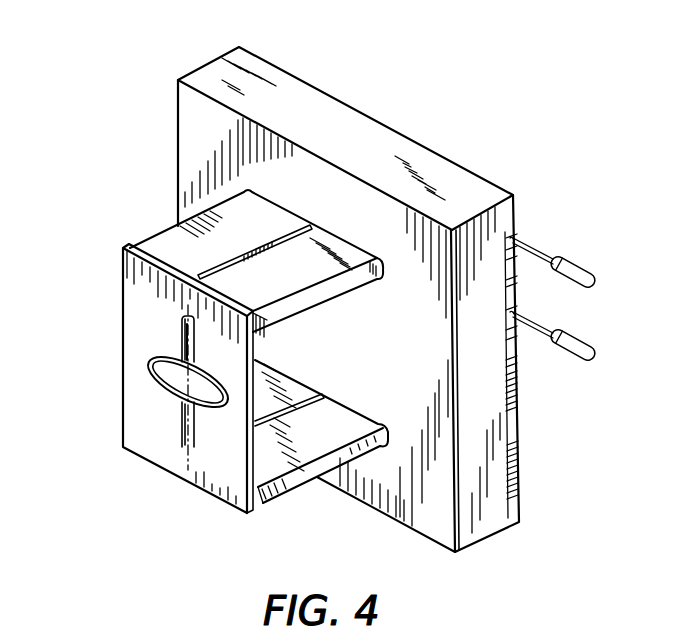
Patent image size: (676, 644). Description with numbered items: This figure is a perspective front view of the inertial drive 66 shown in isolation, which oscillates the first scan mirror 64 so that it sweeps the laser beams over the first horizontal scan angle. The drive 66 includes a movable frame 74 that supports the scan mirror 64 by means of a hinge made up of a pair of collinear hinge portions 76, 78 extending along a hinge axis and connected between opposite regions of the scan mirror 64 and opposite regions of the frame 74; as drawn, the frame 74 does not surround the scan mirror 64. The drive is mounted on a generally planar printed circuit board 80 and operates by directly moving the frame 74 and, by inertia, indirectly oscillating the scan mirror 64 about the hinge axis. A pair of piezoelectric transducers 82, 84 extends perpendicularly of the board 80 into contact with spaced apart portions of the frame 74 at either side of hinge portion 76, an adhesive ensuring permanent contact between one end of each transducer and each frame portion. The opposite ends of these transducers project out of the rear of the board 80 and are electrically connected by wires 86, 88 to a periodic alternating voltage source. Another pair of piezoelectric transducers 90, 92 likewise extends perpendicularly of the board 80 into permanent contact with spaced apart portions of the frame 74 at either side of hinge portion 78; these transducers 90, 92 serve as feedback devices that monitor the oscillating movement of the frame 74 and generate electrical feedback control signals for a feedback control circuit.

The inertial drive 66 is at (178, 56).
The printed circuit board 80 is at (405, 136).
The piezoelectric transducer 82 is at (173, 238).
The piezoelectric transducer 84 is at (292, 287).
The movable frame 74 is at (138, 303).
The hinge portion 76 is at (183, 340).
The hinge portion 78 is at (196, 433).
The first scan mirror 64 is at (175, 383).
The piezoelectric transducer 90 is at (312, 371).
The piezoelectric transducer 92 is at (283, 487).
The wire 86 is at (577, 265).
The wire 88 is at (575, 350).